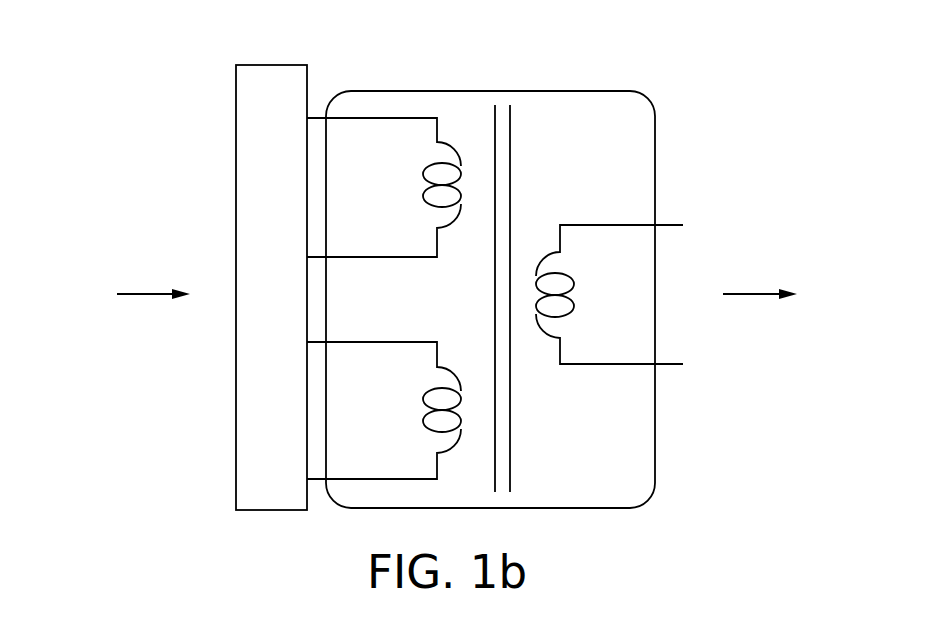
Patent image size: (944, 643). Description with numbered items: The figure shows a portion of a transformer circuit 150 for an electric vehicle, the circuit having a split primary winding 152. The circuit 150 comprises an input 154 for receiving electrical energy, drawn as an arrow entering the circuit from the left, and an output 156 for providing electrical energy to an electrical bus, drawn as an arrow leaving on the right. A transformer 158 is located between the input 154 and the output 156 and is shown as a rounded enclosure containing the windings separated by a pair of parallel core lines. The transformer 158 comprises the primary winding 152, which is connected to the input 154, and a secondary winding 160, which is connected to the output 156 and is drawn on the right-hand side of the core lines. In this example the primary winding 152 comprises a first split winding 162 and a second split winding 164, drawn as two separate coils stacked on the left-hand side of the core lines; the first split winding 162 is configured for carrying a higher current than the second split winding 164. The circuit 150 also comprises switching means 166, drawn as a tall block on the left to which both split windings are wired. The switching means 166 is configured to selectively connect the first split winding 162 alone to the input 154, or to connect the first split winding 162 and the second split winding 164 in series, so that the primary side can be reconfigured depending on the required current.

The transformer circuit 150 is at (176, 89).
The primary winding 152 is at (401, 101).
The input 154 is at (146, 293).
The output 156 is at (752, 293).
The transformer 158 is at (632, 128).
The secondary winding 160 is at (604, 224).
The first split winding 162 is at (344, 117).
The second split winding 164 is at (380, 341).
The switching means 166 is at (293, 98).